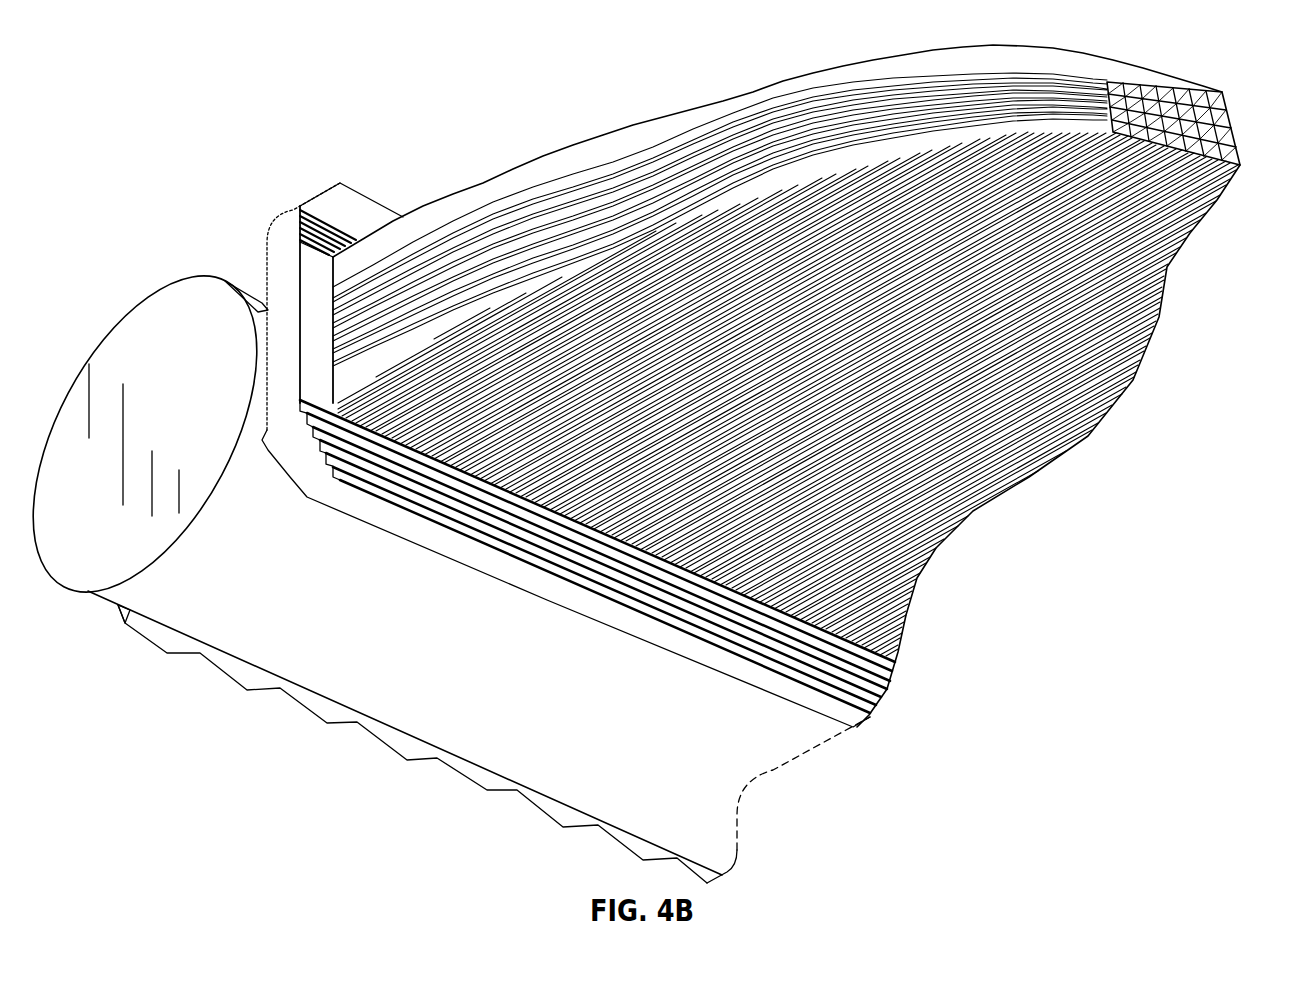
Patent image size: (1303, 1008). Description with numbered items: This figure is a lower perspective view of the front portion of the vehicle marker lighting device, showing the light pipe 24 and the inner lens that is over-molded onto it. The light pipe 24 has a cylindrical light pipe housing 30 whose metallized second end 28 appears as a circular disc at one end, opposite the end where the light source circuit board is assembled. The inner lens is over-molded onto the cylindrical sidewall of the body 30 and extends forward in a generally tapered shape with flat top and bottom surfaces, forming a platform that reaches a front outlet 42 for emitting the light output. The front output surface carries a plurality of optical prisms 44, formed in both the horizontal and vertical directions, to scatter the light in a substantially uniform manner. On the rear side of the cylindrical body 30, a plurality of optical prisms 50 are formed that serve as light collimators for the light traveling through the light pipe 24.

The light pipe 24 is at (773, 366).
The metallized second end 28 is at (132, 325).
The cylindrical light pipe housing 30 is at (323, 623).
The front outlet 42 is at (1223, 130).
The optical prisms 44 is at (1172, 110).
The optical prisms 50 is at (305, 708).